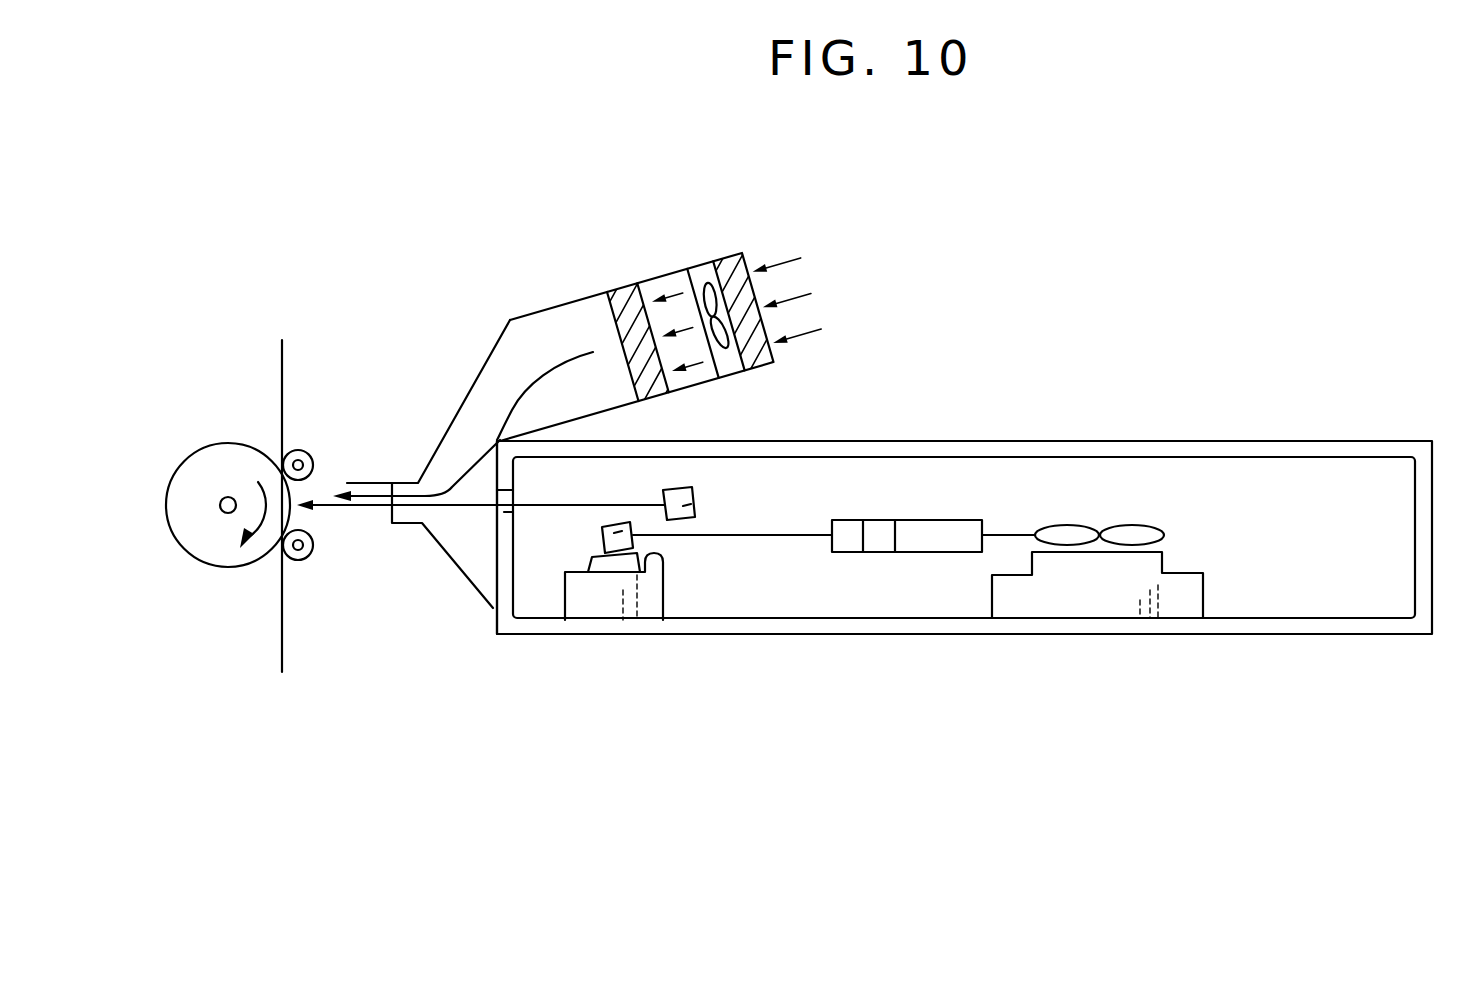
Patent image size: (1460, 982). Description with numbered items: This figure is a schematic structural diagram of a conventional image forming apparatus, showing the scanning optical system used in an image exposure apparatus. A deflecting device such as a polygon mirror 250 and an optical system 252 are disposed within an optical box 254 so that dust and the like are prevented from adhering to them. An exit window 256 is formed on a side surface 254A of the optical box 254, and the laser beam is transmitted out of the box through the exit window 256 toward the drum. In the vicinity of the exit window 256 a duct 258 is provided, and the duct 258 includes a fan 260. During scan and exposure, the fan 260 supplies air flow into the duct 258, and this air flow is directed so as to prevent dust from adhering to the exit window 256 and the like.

The polygon mirror 250 is at (1067, 532).
The optical system 252 is at (623, 523).
The optical box 254 is at (1327, 440).
The side surface 254A is at (493, 572).
The exit window 256 is at (510, 512).
The duct 258 is at (577, 300).
The fan 260 is at (702, 263).